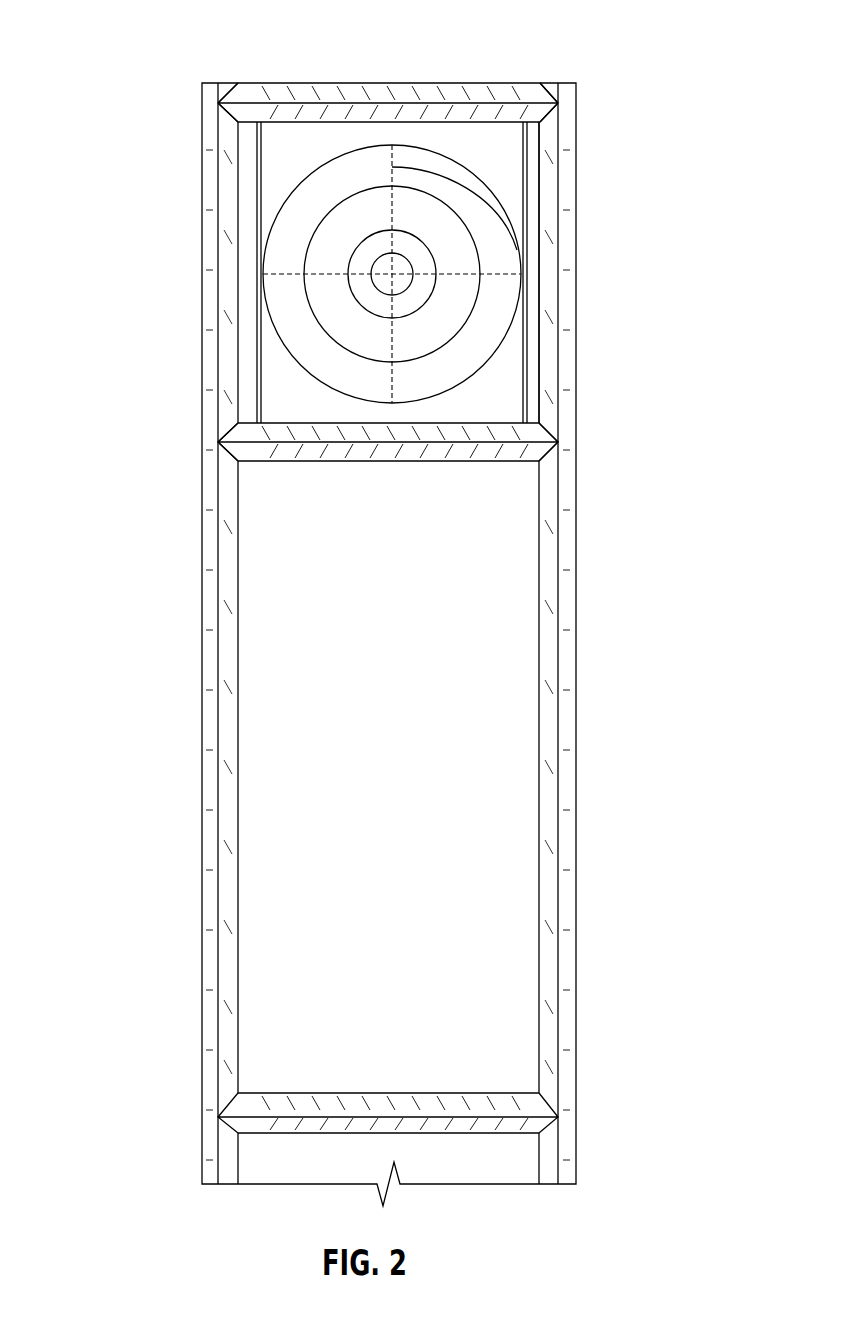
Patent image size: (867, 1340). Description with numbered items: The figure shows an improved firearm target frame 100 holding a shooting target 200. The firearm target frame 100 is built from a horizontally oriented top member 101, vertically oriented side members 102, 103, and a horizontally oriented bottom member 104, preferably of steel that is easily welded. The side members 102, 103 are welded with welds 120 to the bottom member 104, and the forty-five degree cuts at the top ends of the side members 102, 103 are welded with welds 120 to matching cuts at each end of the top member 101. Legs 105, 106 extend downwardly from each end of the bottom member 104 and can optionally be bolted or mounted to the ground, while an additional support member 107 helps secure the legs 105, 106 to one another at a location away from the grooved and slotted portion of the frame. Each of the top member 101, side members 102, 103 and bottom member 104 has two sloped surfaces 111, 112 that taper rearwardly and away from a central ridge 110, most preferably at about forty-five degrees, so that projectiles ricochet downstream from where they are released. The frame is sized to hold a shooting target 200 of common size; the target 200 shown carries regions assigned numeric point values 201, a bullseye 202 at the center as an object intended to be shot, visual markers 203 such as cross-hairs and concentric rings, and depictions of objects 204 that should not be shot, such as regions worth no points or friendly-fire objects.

The firearm target frame 100 is at (141, 38).
The top member 101 is at (478, 97).
The side member 102 is at (202, 268).
The side member 103 is at (568, 393).
The bottom member 104 is at (555, 534).
The leg 105 is at (203, 700).
The leg 106 is at (560, 709).
The support member 107 is at (460, 1100).
The central ridge 110 is at (413, 455).
The sloped surface 111 is at (257, 432).
The sloped surface 112 is at (295, 453).
The weld 120 is at (226, 111).
The shooting target 200 is at (505, 172).
The regions assigned numeric point values 201 is at (503, 296).
The bullseye 202 is at (513, 237).
The visual markers 203 is at (450, 275).
The depictions of objects that should not be shot 204 is at (289, 385).